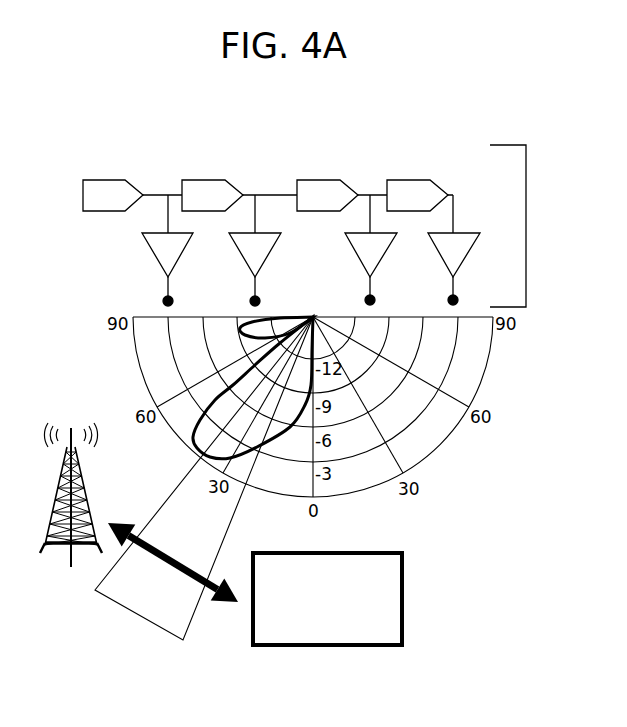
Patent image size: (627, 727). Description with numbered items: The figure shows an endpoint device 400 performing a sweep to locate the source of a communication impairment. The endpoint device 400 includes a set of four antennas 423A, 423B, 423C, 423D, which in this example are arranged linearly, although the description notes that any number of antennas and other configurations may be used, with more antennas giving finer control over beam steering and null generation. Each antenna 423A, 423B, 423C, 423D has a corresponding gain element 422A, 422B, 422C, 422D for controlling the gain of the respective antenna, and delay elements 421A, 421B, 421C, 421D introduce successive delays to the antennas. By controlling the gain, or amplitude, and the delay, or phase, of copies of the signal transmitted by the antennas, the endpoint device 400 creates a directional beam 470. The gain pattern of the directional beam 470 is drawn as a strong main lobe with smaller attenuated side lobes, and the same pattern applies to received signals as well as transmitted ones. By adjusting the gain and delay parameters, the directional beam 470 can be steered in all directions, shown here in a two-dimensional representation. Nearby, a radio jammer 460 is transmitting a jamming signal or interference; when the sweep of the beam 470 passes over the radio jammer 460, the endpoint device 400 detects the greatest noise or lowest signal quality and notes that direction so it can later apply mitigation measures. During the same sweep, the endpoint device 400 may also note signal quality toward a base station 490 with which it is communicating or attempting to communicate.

The endpoint device 400 is at (526, 223).
The delay element 421A is at (107, 180).
The delay element 421B is at (203, 180).
The delay element 421C is at (317, 180).
The delay element 421D is at (410, 180).
The gain element 422A is at (143, 236).
The gain element 422B is at (230, 236).
The gain element 422C is at (346, 236).
The gain element 422D is at (429, 236).
The antenna 423A is at (164, 301).
The antenna 423B is at (251, 301).
The antenna 423C is at (366, 300).
The antenna 423D is at (448, 300).
The radio jammer 460 is at (311, 637).
The directional beam 470 is at (167, 598).
The base station 490 is at (80, 472).